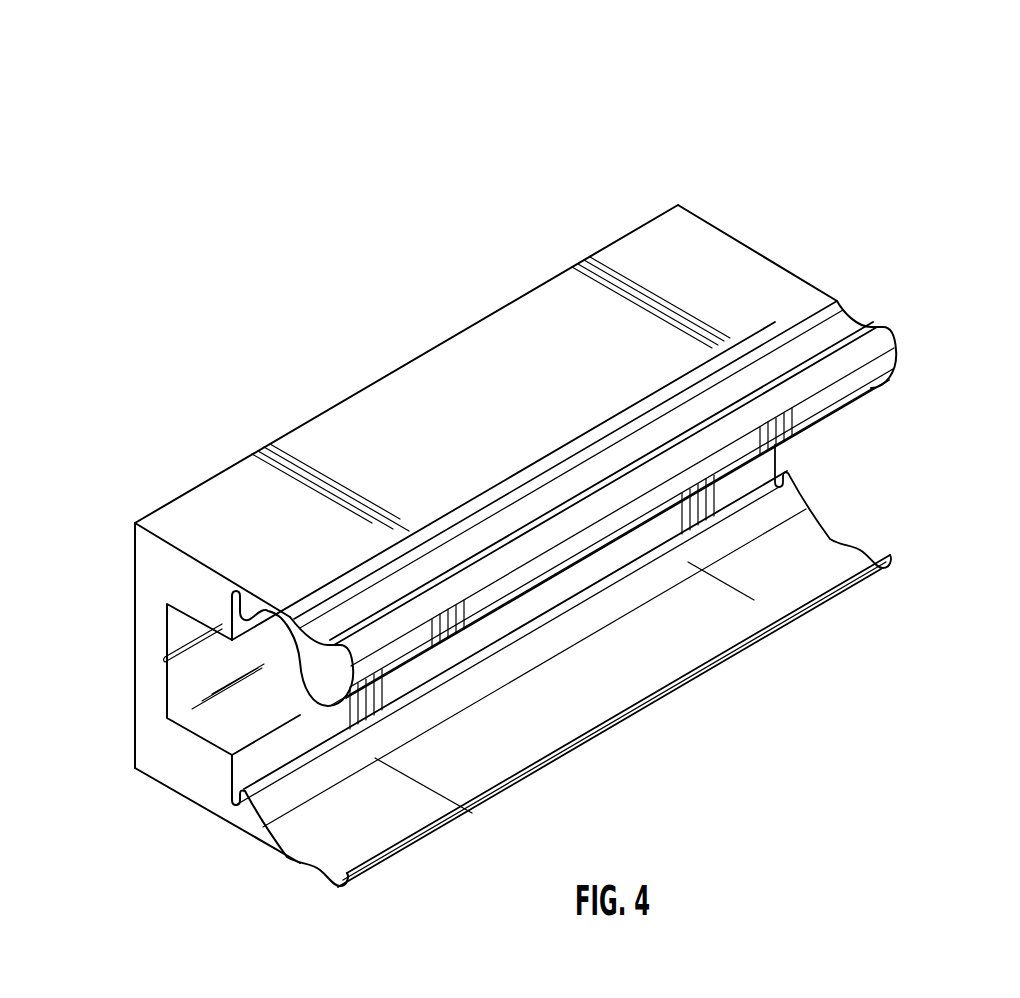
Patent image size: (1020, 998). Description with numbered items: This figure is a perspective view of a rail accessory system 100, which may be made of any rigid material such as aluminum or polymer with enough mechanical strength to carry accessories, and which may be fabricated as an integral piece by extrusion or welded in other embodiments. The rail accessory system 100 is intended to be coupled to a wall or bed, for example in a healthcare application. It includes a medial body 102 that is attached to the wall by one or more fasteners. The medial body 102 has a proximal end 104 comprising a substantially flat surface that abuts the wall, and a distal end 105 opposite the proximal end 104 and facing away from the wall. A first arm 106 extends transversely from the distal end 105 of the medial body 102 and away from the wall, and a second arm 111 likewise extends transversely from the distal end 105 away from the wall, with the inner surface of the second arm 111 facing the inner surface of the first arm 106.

The rail accessory system 100 is at (463, 487).
The medial body 102 is at (138, 649).
The proximal end 104 is at (133, 681).
The distal end 105 is at (173, 683).
The first arm 106 is at (733, 268).
The second arm 111 is at (337, 886).